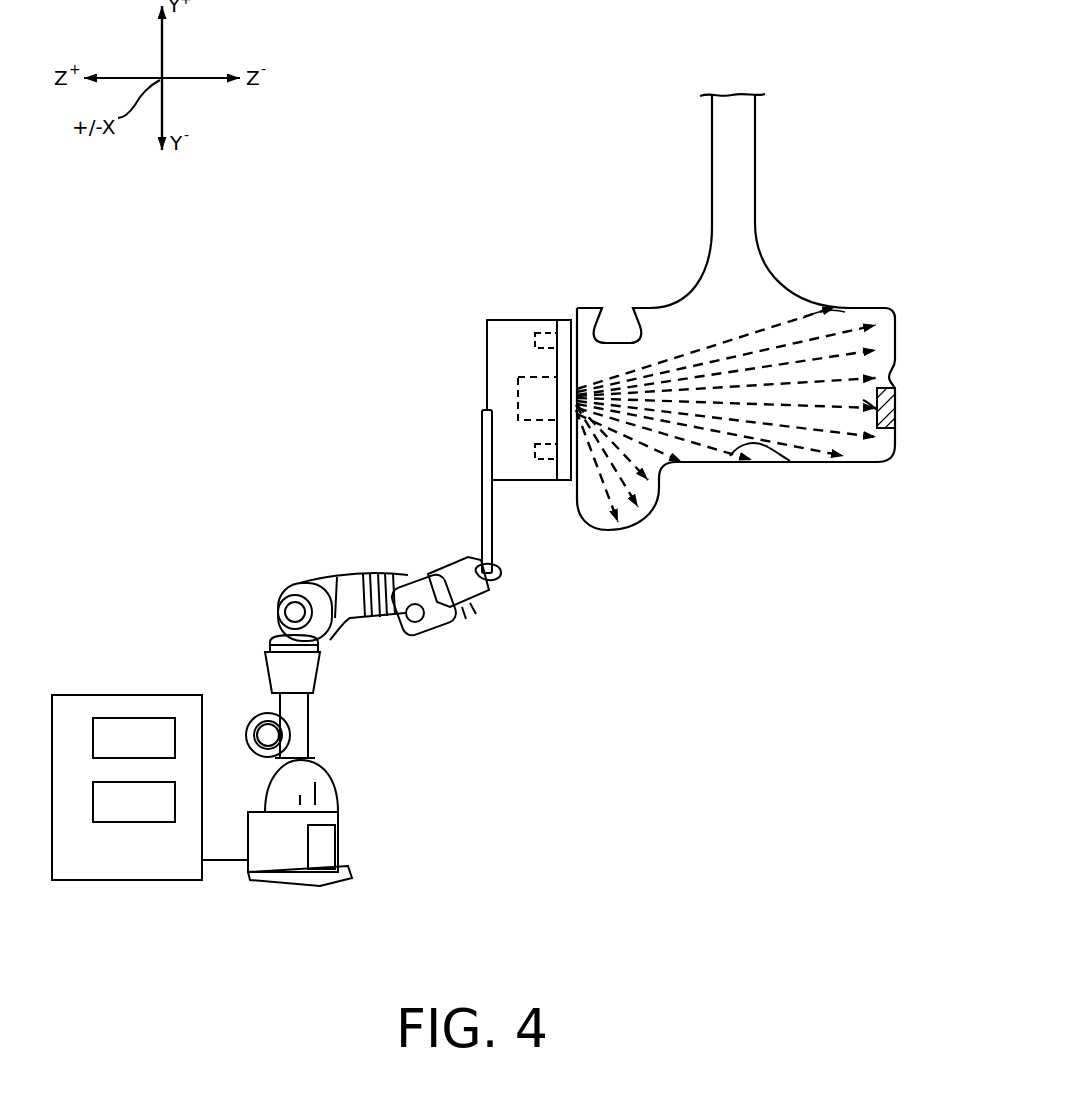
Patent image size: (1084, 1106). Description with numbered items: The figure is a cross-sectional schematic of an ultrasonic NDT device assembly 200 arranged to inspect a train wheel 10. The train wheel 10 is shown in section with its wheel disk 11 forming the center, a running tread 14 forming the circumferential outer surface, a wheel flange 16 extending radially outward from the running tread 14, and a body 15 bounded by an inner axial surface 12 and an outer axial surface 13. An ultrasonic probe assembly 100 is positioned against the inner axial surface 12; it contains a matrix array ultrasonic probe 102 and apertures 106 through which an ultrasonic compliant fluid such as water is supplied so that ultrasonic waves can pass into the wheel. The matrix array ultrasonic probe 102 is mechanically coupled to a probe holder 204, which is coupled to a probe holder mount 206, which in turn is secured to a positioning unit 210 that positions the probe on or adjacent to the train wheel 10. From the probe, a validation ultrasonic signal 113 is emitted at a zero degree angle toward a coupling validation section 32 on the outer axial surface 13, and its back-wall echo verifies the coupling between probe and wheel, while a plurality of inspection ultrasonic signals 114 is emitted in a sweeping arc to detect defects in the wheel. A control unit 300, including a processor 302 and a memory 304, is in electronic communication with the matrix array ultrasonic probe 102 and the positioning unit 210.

The train wheel 10 is at (606, 136).
The wheel disk 11 is at (755, 187).
The inner axial surface 12 is at (577, 318).
The outer axial surface 13 is at (897, 400).
The running tread 14 is at (852, 385).
The body 15 is at (775, 452).
The wheel flange 16 is at (585, 523).
The coupling validation section 32 is at (893, 372).
The ultrasonic probe assembly 100 is at (478, 352).
The matrix array ultrasonic probe 102 is at (522, 375).
The apertures 106 is at (537, 336).
The validation ultrasonic signal 113 is at (882, 420).
The inspection ultrasonic signals 114 is at (768, 447).
The ultrasonic NDT device assembly 200 is at (393, 522).
The probe holder 204 is at (482, 425).
The probe holder mount 206 is at (498, 578).
The positioning unit 210 is at (320, 676).
The control unit 300 is at (122, 695).
The processor 302 is at (134, 738).
The memory 304 is at (134, 802).